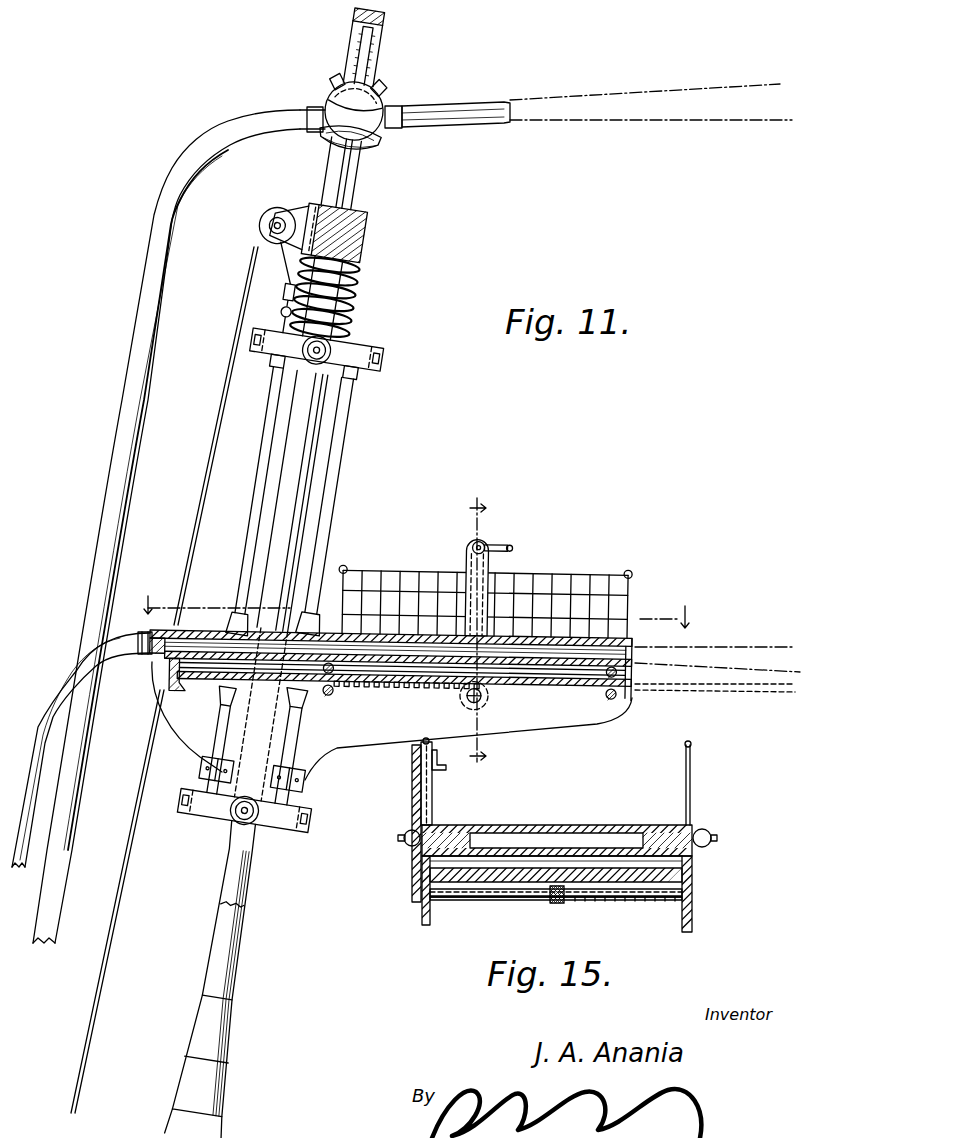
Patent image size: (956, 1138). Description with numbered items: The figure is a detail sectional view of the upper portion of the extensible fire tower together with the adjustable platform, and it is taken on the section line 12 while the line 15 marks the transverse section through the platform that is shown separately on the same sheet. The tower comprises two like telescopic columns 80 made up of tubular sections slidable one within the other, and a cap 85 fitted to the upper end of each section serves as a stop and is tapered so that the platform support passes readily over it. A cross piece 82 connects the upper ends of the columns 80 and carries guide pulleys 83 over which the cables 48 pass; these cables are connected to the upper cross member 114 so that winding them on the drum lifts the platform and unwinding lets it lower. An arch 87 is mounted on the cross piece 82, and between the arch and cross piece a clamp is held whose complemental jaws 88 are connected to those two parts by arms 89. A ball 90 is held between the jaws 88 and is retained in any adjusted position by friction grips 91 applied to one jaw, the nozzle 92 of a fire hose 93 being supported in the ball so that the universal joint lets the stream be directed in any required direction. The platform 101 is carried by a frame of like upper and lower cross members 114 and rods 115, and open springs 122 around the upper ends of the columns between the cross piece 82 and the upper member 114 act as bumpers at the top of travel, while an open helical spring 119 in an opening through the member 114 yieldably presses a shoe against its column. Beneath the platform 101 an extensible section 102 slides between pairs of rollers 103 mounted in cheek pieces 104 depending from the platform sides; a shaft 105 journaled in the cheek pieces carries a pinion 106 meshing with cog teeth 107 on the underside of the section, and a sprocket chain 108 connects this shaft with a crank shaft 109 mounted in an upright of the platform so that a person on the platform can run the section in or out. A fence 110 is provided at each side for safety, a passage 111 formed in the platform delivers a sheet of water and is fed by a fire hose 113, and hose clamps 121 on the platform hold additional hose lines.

In FIG. 11, the section line 12- 12 is at (454, 644).
In FIG. 11, the section line 15- 15 is at (478, 630).
In FIG. 11, the cables 48 is at (204, 494).
In FIG. 11, the columns 80 is at (185, 1130).
In FIG. 11, the cross piece 82 is at (372, 240).
In FIG. 11, the guide pulleys 83 is at (272, 224).
In FIG. 11, the cap 85 is at (232, 1060).
In FIG. 11, the arch 87 is at (388, 14).
In FIG. 11, the complemental jaws 88 is at (336, 82).
In FIG. 11, the arms 89 is at (372, 56).
In FIG. 11, the ball 90 is at (390, 136).
In FIG. 11, the friction grips 91 is at (330, 98).
In FIG. 11, the nozzle 92 is at (474, 104).
In FIG. 11, the fire hose 93 is at (128, 414).
In FIG. 11, the platform 101 is at (634, 636).
In FIG. 15, the platform 101 is at (614, 824).
In FIG. 11, the section 102 is at (572, 692).
In FIG. 15, the section 102 is at (655, 899).
In FIG. 11, the rollers 103 is at (330, 702).
In FIG. 15, the rollers 103 is at (507, 874).
In FIG. 11, the cheek pieces 104 is at (312, 756).
In FIG. 15, the cheek pieces 104 is at (422, 926).
In FIG. 11, the shaft 105 is at (480, 708).
In FIG. 15, the shaft 105 is at (622, 898).
In FIG. 11, the pinion 106 is at (488, 698).
In FIG. 15, the pinion 106 is at (555, 903).
In FIG. 11, the cog teeth 107 is at (434, 690).
In FIG. 15, the cog teeth 107 is at (583, 899).
In FIG. 11, the sprocket chain 108 is at (462, 560).
In FIG. 15, the sprocket chain 108 is at (412, 862).
In FIG. 11, the crank shaft 109 is at (484, 543).
In FIG. 15, the crank shaft 109 is at (412, 764).
In FIG. 11, the fence 110 is at (622, 572).
In FIG. 15, the fence 110 is at (434, 807).
In FIG. 11, the passage 111 is at (152, 656).
In FIG. 15, the passage 111 is at (545, 845).
In FIG. 11, the fire hose 113 is at (62, 676).
In FIG. 11, the cross members 114 is at (362, 348).
In FIG. 11, the rods 115 is at (275, 442).
In FIG. 11, the open helical spring 119 is at (263, 835).
In FIG. 15, the hose clamps 121 is at (404, 834).
In FIG. 11, the open springs 122 is at (355, 293).